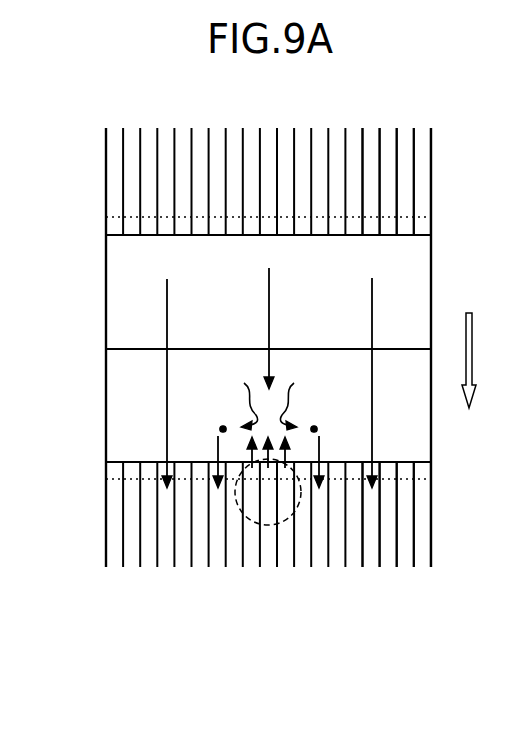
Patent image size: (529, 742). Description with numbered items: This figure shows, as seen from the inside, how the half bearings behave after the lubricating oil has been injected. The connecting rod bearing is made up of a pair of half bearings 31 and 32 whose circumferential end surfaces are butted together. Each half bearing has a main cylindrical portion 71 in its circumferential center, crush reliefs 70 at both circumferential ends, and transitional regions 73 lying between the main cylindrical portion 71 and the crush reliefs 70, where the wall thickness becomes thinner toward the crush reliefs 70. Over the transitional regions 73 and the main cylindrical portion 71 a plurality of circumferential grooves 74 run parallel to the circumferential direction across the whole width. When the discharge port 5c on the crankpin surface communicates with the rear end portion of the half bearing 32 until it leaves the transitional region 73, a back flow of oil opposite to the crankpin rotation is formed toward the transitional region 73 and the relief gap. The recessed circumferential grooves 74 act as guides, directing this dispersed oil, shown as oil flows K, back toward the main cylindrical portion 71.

The crush relief 70 is at (442, 256).
The main cylindrical portion 71 is at (442, 170).
The transitional region 73 is at (442, 226).
The circumferential groove 74 is at (372, 128).
The half bearing 31 is at (88, 294).
The half bearing 32 is at (169, 431).
The discharge port 5c is at (250, 517).
The oil flow K is at (267, 402).